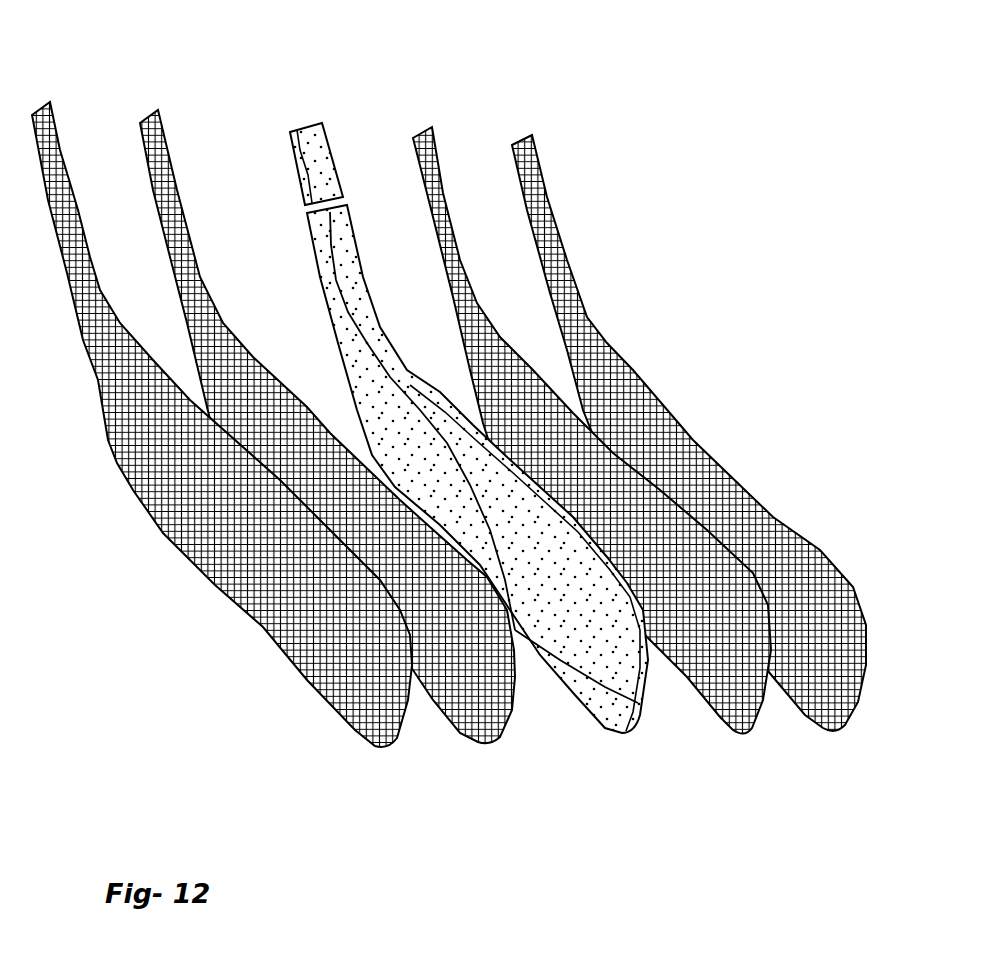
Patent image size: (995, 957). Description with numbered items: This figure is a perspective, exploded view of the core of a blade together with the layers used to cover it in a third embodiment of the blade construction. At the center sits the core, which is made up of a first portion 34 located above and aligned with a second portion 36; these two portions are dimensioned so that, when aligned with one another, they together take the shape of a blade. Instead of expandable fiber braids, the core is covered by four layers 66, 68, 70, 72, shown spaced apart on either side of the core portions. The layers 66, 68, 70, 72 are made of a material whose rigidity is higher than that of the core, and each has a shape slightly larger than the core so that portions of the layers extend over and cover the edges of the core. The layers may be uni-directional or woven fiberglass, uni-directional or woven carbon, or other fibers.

The first portion 34 is at (547, 548).
The second portion 36 is at (437, 500).
The layer 66 is at (485, 752).
The layer 68 is at (746, 740).
The layer 70 is at (388, 752).
The layer 72 is at (841, 735).